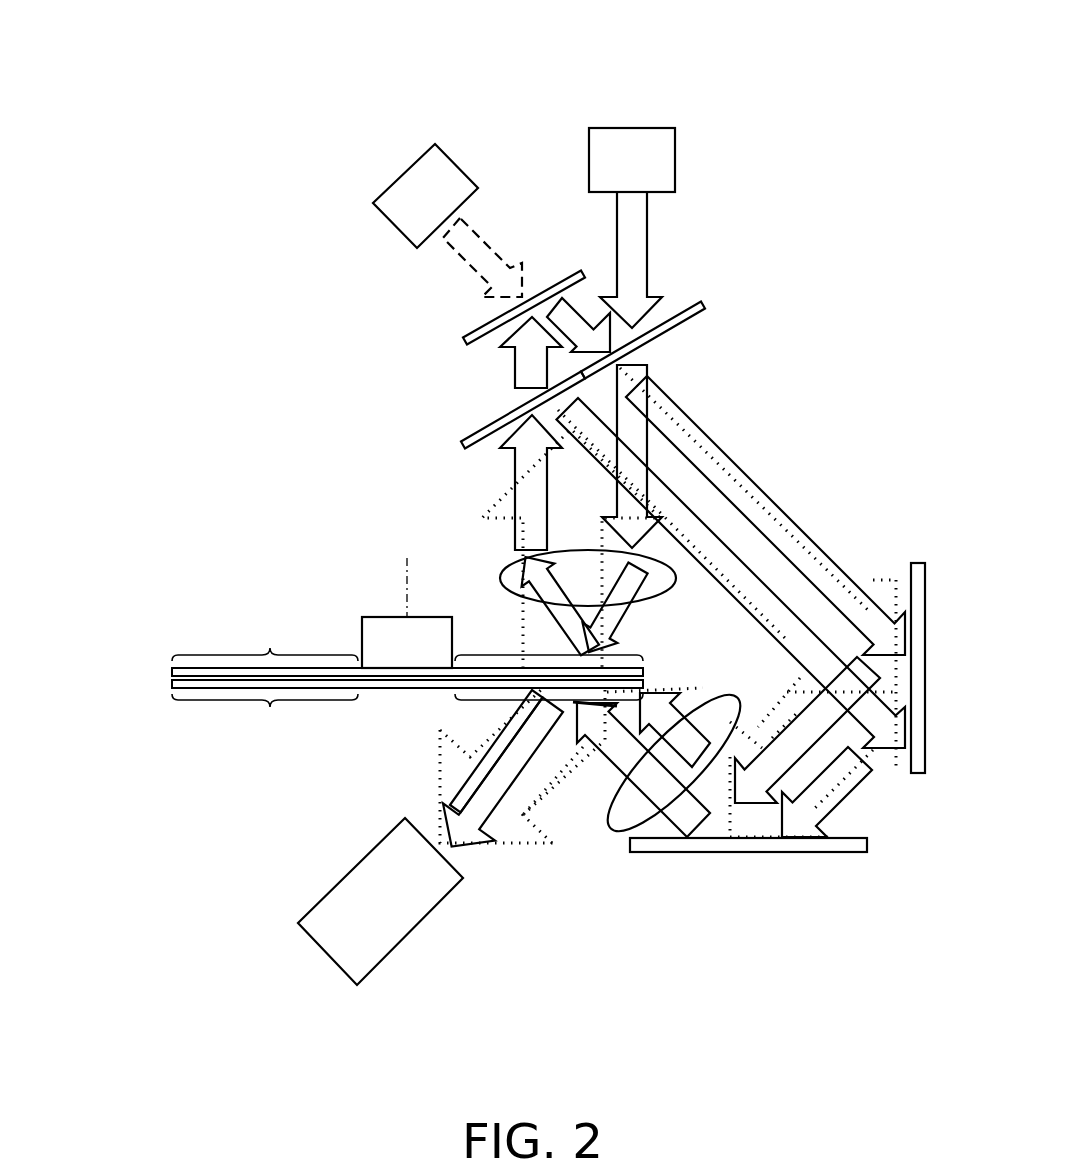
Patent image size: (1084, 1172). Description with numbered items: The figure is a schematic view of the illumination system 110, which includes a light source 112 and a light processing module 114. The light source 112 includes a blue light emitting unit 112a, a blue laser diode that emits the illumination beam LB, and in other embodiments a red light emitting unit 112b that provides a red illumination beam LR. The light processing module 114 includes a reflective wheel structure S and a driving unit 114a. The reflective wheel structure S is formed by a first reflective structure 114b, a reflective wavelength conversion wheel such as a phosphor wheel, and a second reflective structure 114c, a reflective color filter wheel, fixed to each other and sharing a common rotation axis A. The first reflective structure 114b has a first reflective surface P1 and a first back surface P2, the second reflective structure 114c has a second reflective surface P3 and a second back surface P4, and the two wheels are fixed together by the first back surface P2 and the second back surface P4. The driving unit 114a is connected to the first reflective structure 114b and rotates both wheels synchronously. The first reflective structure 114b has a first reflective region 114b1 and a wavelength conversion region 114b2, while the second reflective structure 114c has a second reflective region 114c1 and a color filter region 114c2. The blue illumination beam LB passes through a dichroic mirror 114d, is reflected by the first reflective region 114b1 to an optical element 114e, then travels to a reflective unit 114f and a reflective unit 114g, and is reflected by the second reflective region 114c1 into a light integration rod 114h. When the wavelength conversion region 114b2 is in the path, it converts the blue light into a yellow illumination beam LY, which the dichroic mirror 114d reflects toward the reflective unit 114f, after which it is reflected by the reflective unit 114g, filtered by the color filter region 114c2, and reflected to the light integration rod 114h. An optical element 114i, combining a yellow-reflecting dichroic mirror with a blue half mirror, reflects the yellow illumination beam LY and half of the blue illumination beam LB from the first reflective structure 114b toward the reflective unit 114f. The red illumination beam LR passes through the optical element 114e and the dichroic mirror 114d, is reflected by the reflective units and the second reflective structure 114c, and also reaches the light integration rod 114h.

The illumination system 110 is at (958, 1039).
The light source 112 is at (593, 41).
The blue light emitting unit 112a is at (597, 162).
The red light emitting unit 112b is at (445, 177).
The illumination beam LB is at (648, 218).
The illumination beam LR is at (503, 248).
The illumination beam LY is at (490, 510).
The light processing module 114 is at (887, 332).
The driving unit 114a is at (385, 628).
The first reflective structure 114b is at (172, 672).
The first reflective region 114b1 is at (518, 592).
The wavelength conversion region 114b2 is at (270, 648).
The second reflective structure 114c is at (172, 684).
The second reflective region 114c1 is at (558, 702).
The color filter region 114c2 is at (270, 707).
The dichroic mirror 114d is at (704, 306).
The optical element 114e is at (463, 342).
The reflective unit 114f is at (918, 563).
The reflective unit 114g is at (868, 845).
The light integration rod 114h is at (410, 922).
The optical element 114i is at (464, 445).
The reflective wheel structure S is at (73, 640).
The rotation axis A is at (400, 573).
The first reflective surface P1 is at (187, 664).
The first back surface P2 is at (218, 688).
The second reflective surface P3 is at (192, 692).
The second back surface P4 is at (205, 668).